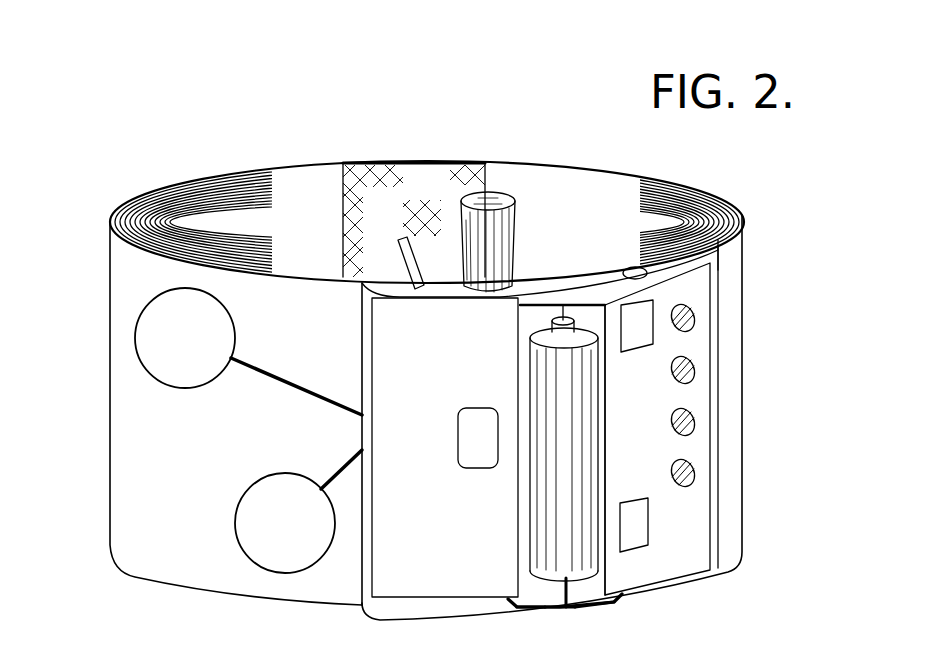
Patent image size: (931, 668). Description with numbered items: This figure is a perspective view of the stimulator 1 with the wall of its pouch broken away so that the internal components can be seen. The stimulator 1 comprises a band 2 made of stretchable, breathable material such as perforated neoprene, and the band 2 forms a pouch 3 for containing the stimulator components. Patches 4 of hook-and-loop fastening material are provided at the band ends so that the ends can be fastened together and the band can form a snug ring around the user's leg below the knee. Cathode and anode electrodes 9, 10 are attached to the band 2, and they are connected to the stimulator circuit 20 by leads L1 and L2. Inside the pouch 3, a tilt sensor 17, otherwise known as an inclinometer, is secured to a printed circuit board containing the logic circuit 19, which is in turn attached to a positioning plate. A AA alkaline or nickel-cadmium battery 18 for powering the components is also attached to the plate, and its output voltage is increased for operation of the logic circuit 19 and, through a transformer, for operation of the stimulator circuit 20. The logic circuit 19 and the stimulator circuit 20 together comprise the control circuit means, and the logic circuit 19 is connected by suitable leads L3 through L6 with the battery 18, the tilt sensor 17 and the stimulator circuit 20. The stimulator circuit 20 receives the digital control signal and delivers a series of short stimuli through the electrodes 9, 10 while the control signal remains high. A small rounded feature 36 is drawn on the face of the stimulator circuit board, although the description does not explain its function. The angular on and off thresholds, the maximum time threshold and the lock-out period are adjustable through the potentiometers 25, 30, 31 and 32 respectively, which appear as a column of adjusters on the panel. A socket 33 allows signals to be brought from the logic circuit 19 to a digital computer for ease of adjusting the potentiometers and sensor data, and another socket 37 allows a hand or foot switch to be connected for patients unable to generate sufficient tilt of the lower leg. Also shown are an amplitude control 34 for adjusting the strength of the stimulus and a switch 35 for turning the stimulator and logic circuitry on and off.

The stimulator 1 is at (212, 153).
The band 2 is at (162, 556).
The pouch 3 is at (712, 582).
The patches 4 is at (414, 180).
The cathode electrode 9 is at (195, 354).
The anode electrode 10 is at (272, 538).
The tilt sensor 17 is at (628, 312).
The battery 18 is at (592, 550).
The logic circuit 19 is at (627, 437).
The stimulator circuit 20 is at (464, 551).
The potentiometer 25 is at (696, 318).
The potentiometer 30 is at (696, 372).
The potentiometer 31 is at (696, 424).
The potentiometer 32 is at (696, 475).
The socket 33 is at (642, 535).
The amplitude control 34 is at (516, 208).
The switch 35 is at (408, 266).
The opening 36 is at (467, 437).
The socket 37 is at (634, 268).
The lead L1 is at (270, 374).
The lead L2 is at (340, 470).
The lead L3 is at (548, 603).
The lead L6 is at (594, 604).